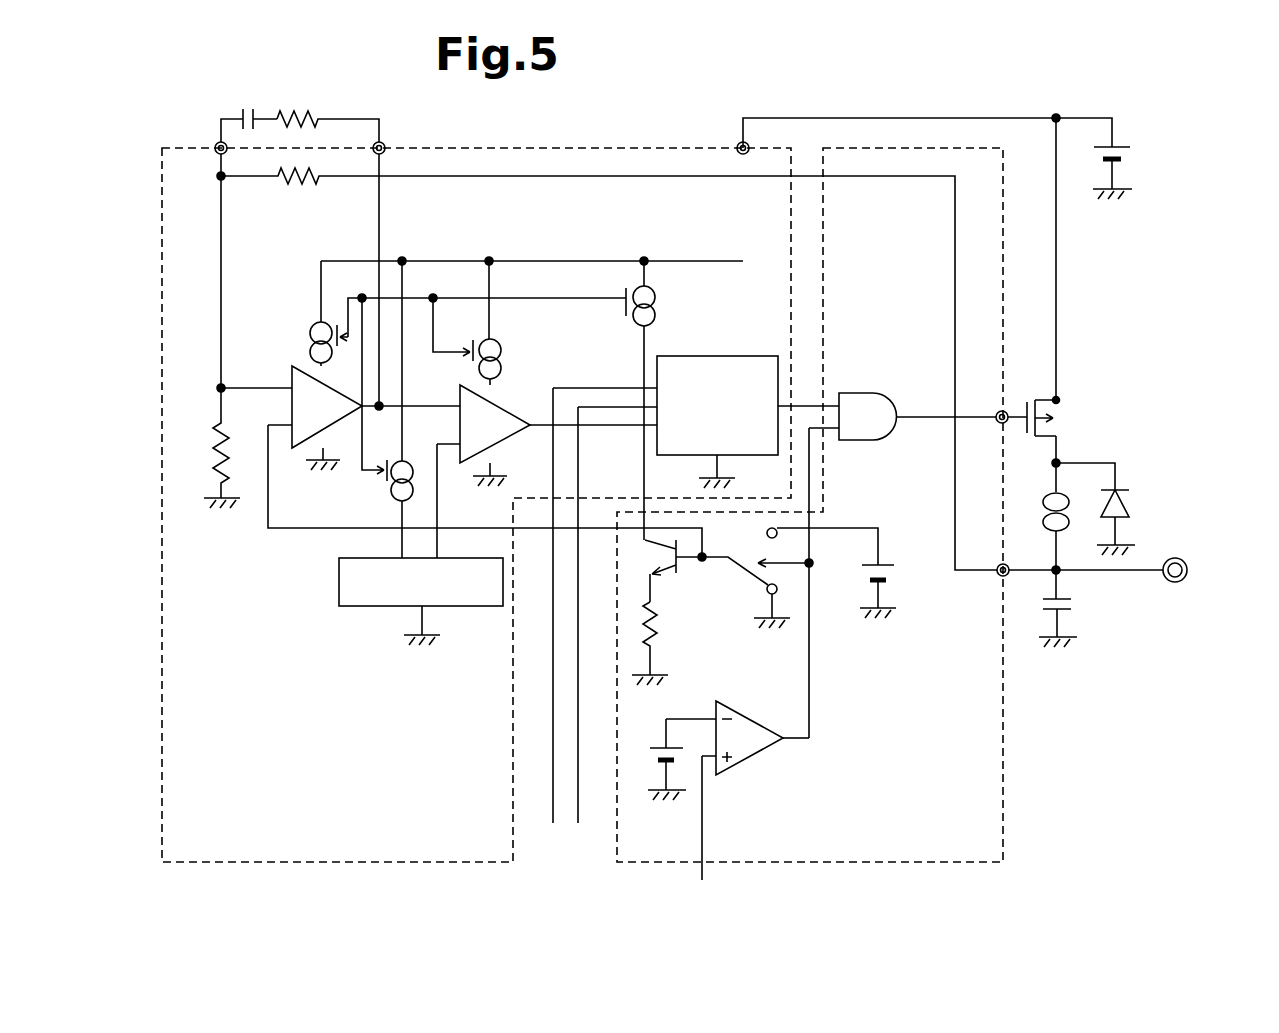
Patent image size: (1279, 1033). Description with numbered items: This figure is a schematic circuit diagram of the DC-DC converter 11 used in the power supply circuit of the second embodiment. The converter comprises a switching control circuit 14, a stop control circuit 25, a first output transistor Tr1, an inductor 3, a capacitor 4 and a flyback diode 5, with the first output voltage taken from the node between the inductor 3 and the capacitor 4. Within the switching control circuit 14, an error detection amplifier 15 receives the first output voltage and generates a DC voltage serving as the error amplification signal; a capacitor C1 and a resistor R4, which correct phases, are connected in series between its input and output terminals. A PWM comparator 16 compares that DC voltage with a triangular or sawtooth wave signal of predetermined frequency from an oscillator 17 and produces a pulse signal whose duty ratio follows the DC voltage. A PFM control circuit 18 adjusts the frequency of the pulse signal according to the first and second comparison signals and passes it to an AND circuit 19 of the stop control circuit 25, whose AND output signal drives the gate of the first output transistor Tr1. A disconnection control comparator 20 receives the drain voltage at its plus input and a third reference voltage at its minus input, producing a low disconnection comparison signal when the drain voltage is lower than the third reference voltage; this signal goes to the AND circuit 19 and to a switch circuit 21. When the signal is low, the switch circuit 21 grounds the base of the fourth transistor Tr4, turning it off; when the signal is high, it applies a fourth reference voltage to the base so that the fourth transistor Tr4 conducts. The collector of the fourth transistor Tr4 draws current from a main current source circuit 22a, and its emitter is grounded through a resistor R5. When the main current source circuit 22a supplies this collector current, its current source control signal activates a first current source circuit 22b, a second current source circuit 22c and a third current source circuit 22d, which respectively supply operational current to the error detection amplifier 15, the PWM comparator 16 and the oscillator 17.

The DC-DC converter 11 is at (973, 100).
The switching control circuit 14 is at (567, 147).
The error detection amplifier 15 is at (291, 373).
The PWM comparator 16 is at (459, 395).
The oscillator 17 is at (339, 587).
The PFM control circuit 18 is at (741, 356).
The AND circuit 19 is at (853, 393).
The disconnection control comparator 20 is at (757, 720).
The switch circuit 21 is at (746, 563).
The main current source circuit 22a is at (657, 297).
The first current source circuit 22b is at (321, 322).
The second current source circuit 22c is at (394, 489).
The third current source circuit 22d is at (501, 352).
The stop control circuit 25 is at (1003, 768).
The inductor 3 is at (1046, 501).
The capacitor 4 is at (1072, 598).
The flyback diode 5 is at (1125, 489).
The first output transistor Tr1 is at (1054, 434).
The fourth transistor Tr4 is at (676, 582).
The resistor R4 is at (320, 118).
The resistor R5 is at (651, 647).
The capacitor C1 is at (244, 110).